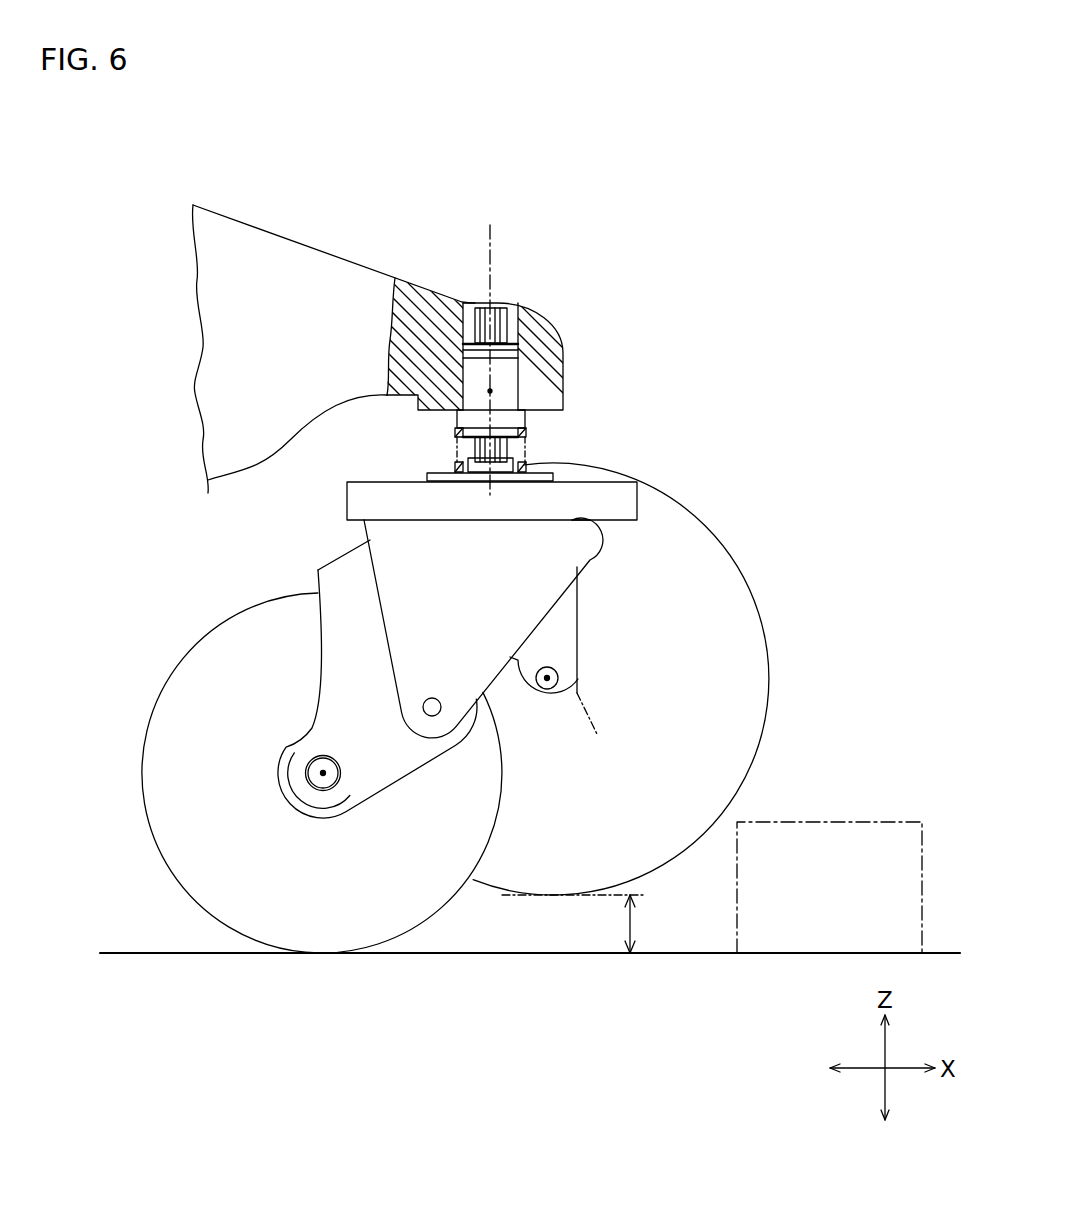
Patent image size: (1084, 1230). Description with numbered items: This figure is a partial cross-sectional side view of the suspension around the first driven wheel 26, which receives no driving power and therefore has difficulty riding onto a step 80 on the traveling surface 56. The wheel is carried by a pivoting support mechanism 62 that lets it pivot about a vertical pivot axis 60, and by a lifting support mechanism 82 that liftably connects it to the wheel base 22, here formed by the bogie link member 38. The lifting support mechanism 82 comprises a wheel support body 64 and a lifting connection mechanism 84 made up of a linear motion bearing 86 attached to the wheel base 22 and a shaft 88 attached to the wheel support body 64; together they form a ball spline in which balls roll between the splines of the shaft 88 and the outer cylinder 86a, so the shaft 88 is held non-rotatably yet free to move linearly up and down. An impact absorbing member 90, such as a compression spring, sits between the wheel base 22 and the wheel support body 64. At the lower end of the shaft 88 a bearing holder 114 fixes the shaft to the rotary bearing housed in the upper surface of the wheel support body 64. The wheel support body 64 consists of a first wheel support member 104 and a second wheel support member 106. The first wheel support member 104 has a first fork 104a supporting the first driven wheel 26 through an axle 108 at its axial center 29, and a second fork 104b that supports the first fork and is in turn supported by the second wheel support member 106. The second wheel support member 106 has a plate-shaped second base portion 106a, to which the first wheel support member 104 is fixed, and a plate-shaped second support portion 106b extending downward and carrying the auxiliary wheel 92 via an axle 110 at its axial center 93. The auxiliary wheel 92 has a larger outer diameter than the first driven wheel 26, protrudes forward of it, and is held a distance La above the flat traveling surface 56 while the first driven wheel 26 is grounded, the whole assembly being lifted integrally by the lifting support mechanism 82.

The wheel base 22 is at (345, 222).
The bogie link member 38 is at (268, 226).
The pivot axis 60 is at (493, 248).
The shaft 88 is at (508, 322).
The outer cylinder 86a is at (512, 365).
The linear motion bearing 86 is at (523, 378).
The lifting connection mechanism 84 is at (413, 443).
The pivoting support mechanism 62 is at (655, 445).
The impact absorbing member 90 is at (522, 469).
The wheel support body 64 is at (653, 512).
The second base portion 106a is at (345, 503).
The lifting support mechanism 82 is at (305, 540).
The first fork 104a is at (320, 603).
The bearing holder 114 is at (532, 481).
The second wheel support member 106 is at (638, 527).
The auxiliary wheel 92 is at (752, 597).
The second fork 104b is at (570, 558).
The second support portion 106b is at (578, 646).
The axle 110 is at (558, 677).
The axial center 93 is at (600, 738).
The first wheel support member 104 is at (497, 688).
The axle 108 is at (323, 758).
The axial center 29 is at (323, 773).
The step 80 is at (820, 822).
The traveling surface 56 is at (160, 938).
The first driven wheel 26 is at (375, 948).
The clearance height La is at (632, 924).